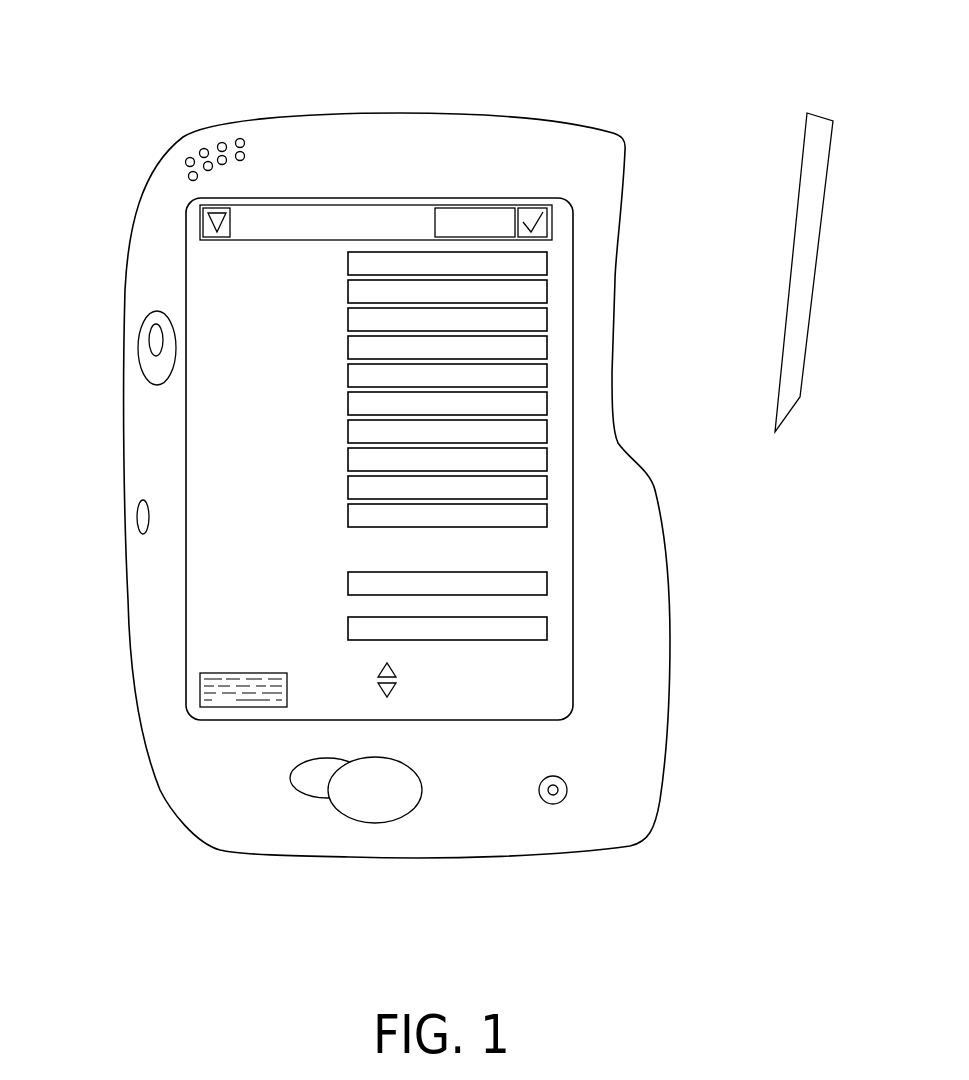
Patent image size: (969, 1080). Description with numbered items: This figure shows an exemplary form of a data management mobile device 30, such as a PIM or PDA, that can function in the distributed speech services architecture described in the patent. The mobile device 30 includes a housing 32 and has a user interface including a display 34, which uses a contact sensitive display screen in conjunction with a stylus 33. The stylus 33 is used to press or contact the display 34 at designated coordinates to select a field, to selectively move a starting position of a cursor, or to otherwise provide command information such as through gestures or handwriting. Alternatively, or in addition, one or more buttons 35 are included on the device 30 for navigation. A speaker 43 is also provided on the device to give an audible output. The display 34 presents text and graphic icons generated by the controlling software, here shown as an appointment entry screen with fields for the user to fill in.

The handheld device 30 is at (117, 67).
The housing 32 is at (417, 115).
The stylus 33 is at (813, 297).
The display screen 34 is at (515, 515).
The buttons 35 is at (150, 340).
The speaker 43 is at (222, 147).